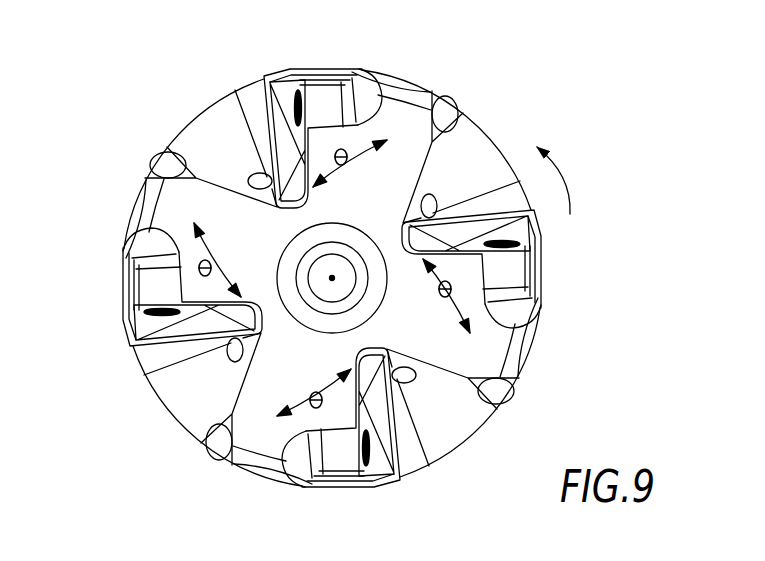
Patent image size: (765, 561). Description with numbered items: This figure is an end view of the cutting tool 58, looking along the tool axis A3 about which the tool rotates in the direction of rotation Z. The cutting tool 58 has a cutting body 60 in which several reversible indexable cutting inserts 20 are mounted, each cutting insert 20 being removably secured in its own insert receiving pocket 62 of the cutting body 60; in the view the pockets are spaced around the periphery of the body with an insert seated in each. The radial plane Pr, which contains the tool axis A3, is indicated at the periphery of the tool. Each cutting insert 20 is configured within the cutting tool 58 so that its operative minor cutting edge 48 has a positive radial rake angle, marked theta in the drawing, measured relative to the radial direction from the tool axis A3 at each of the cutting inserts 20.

The cutting tool 58 is at (188, 103).
The cutting insert 20 is at (353, 77).
The minor cutting edge 48 is at (313, 68).
The insert receiving pocket 62 is at (384, 96).
The cutting body 60 is at (265, 375).
The tool axis A3 is at (336, 281).
The radial plane Pr is at (548, 120).
The direction of rotation Z is at (564, 181).